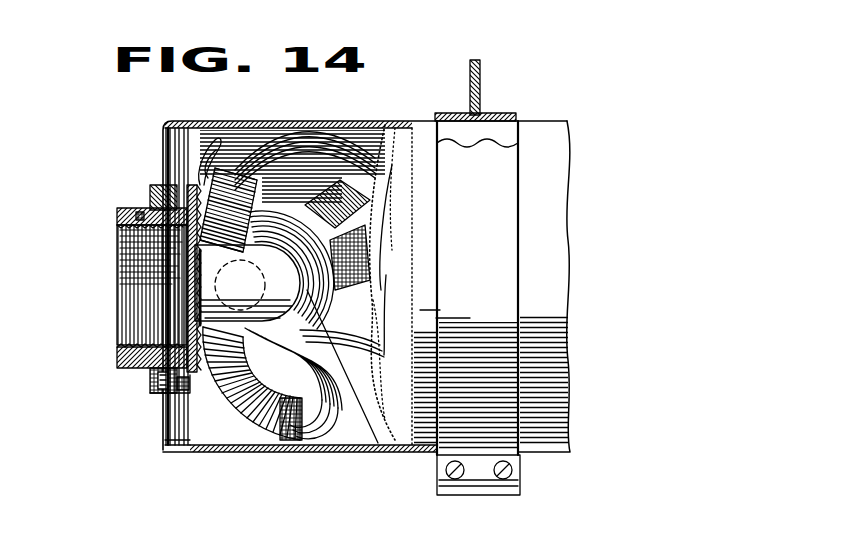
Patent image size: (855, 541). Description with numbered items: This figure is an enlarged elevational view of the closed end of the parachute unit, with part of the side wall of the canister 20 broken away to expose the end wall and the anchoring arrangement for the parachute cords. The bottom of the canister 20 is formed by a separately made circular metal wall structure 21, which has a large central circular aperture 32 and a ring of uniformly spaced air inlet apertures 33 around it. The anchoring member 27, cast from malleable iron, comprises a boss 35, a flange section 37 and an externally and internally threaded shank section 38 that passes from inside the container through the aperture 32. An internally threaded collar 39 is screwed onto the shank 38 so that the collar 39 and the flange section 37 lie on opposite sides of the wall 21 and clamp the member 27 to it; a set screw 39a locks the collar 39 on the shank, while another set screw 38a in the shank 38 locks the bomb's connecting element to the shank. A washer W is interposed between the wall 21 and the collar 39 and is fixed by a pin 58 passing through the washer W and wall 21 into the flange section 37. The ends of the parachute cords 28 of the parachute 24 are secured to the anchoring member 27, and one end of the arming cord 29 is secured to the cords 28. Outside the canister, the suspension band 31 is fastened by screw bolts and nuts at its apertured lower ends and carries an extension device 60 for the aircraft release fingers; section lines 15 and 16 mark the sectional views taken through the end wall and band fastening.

The section line 15- 15 is at (118, 135).
The section line 16- 16 is at (433, 105).
The canister 20 is at (325, 455).
The wall structure 21 is at (200, 437).
The parachute 24 is at (398, 258).
The anchoring member 27 is at (103, 268).
The parachute cords 28 is at (340, 442).
The arming cord 29 is at (205, 150).
The suspension band 31 is at (515, 260).
The central circular aperture 32 is at (150, 376).
The air inlet apertures 33 is at (175, 172).
The boss 35 is at (290, 284).
The flange section 37 is at (232, 400).
The threaded circular shank section 38 is at (117, 356).
The set screw 38a is at (117, 218).
The collar 39 is at (150, 387).
The set screw 39a is at (150, 382).
The pin 58 is at (270, 420).
The extension device 60 is at (492, 62).
The washer W is at (150, 195).